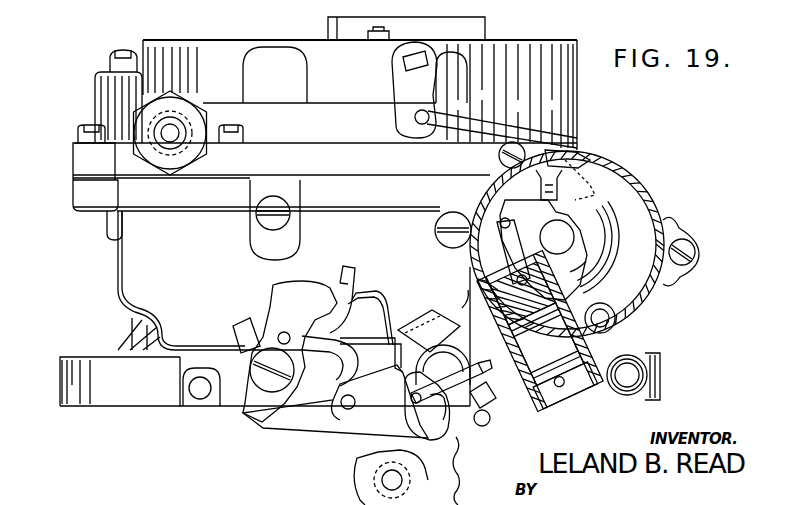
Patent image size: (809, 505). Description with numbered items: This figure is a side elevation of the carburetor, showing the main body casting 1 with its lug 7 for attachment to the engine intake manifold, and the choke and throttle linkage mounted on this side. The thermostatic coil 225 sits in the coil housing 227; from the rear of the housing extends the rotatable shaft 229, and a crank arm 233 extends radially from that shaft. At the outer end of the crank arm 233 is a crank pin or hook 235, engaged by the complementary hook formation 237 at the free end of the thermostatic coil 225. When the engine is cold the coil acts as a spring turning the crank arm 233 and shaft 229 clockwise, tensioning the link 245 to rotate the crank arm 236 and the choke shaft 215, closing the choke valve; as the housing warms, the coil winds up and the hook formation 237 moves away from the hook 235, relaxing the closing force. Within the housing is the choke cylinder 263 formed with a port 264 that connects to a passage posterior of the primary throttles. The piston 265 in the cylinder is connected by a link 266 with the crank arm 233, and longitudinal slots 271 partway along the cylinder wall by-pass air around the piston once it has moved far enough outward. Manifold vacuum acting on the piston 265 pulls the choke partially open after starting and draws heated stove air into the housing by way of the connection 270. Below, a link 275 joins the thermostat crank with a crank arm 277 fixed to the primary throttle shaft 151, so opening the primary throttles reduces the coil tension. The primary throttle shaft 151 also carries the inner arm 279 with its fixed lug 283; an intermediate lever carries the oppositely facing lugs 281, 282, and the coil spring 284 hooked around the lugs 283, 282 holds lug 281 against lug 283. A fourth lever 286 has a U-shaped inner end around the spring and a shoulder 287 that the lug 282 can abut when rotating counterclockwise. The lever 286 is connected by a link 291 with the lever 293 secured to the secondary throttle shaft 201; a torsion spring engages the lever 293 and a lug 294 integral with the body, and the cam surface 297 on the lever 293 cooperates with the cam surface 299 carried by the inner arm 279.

The main body casting 1 is at (115, 299).
The lug 7 is at (70, 358).
The primary throttle shaft 151 is at (416, 334).
The secondary throttle shaft 201 is at (276, 406).
The choke shaft 215 is at (404, 61).
The thermostatic coil 225 is at (618, 226).
The coil housing 227 is at (655, 208).
The rotatable shaft 229 is at (557, 237).
The crank arm 233 is at (503, 178).
The crank pin or hook 235 is at (582, 165).
The crank arm 236 is at (405, 93).
The hook formation 237 is at (562, 152).
The link 245 is at (497, 120).
The choke cylinder 263 is at (488, 286).
The port 264 is at (566, 396).
The piston 265 is at (532, 322).
The link 266 is at (507, 250).
The connection 270 is at (634, 375).
The longitudinal slots 271 is at (542, 346).
The link 275 is at (441, 430).
The crank arm 277 is at (405, 456).
The inner arm 279 is at (392, 341).
The lug 281 is at (491, 424).
The lug 282 is at (500, 340).
The fixed lug 283 is at (497, 400).
The coil spring 284 is at (487, 375).
The fourth lever 286 is at (378, 438).
The shoulder 287 is at (465, 308).
The link 291 is at (331, 360).
The lever 293 is at (275, 308).
The lug 294 is at (232, 331).
The cam surface 297 is at (352, 280).
The cam surface 299 is at (357, 292).